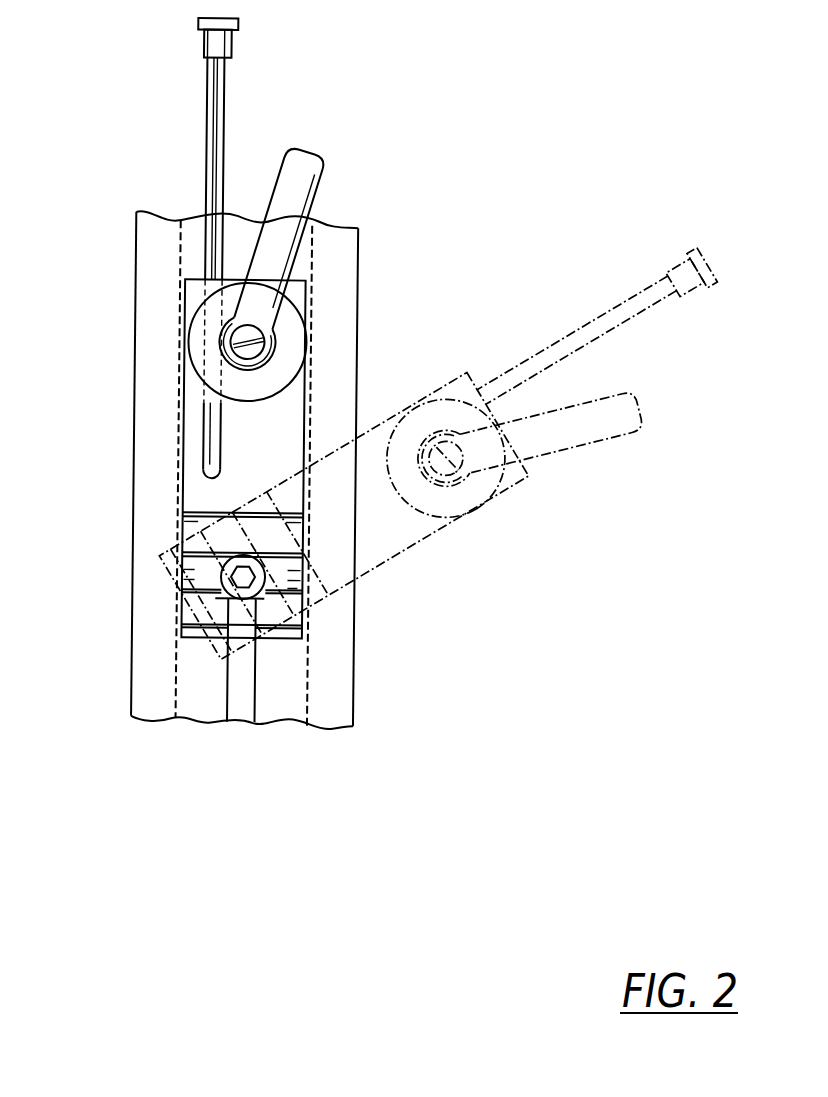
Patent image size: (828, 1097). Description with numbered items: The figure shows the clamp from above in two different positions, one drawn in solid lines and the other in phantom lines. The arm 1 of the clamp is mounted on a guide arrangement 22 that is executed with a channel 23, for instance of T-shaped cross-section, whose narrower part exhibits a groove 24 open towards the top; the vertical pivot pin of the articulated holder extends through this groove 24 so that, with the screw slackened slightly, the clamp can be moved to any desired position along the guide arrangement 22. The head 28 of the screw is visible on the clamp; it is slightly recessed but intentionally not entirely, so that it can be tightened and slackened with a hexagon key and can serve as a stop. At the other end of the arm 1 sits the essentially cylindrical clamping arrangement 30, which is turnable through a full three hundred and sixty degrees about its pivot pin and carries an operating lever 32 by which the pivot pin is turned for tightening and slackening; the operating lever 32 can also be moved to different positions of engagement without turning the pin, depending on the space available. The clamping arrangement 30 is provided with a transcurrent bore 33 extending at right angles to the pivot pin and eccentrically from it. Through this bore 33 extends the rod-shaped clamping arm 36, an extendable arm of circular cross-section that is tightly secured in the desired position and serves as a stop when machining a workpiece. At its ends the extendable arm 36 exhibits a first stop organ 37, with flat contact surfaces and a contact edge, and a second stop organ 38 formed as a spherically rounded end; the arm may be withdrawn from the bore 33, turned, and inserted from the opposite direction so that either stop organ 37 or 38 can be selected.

The arm 1 is at (257, 418).
The guide arrangement 22 is at (112, 687).
The channel 23 is at (312, 703).
The groove 24 is at (251, 703).
The head of the screw 28 is at (225, 574).
The clamping arrangement 30 is at (293, 324).
The operating lever 32 is at (313, 168).
The transcurrent bore 33 is at (220, 312).
The clamping arm 36 is at (212, 100).
The first stop organ 37 is at (264, 20).
The second stop organ 38 is at (209, 478).